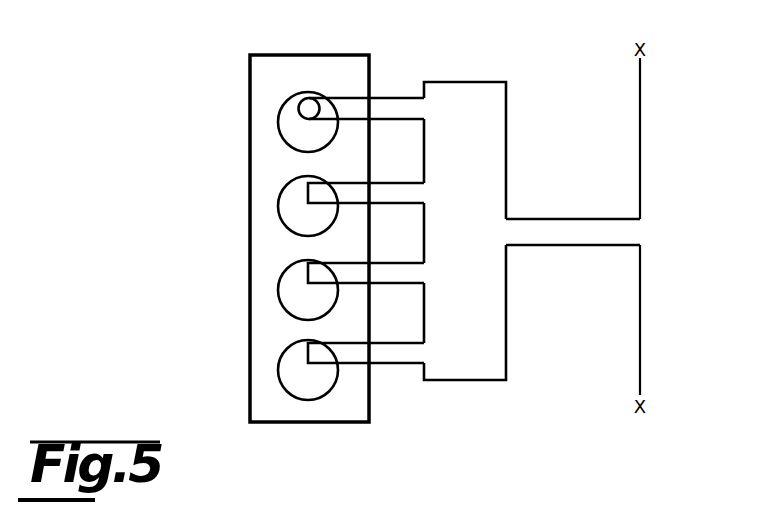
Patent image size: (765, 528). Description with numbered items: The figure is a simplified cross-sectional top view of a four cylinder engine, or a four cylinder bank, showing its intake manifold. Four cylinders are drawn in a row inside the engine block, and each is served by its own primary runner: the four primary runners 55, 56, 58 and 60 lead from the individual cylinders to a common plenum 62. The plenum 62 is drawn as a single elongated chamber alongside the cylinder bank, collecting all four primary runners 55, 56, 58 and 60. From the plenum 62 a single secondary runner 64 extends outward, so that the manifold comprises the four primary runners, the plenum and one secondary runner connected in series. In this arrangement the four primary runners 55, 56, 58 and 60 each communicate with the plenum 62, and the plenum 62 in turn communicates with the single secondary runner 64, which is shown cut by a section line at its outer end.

The primary runner 55 is at (391, 96).
The primary runner 56 is at (393, 181).
The primary runner 58 is at (399, 262).
The primary runner 60 is at (400, 342).
The plenum 62 is at (452, 80).
The secondary runner 64 is at (575, 218).